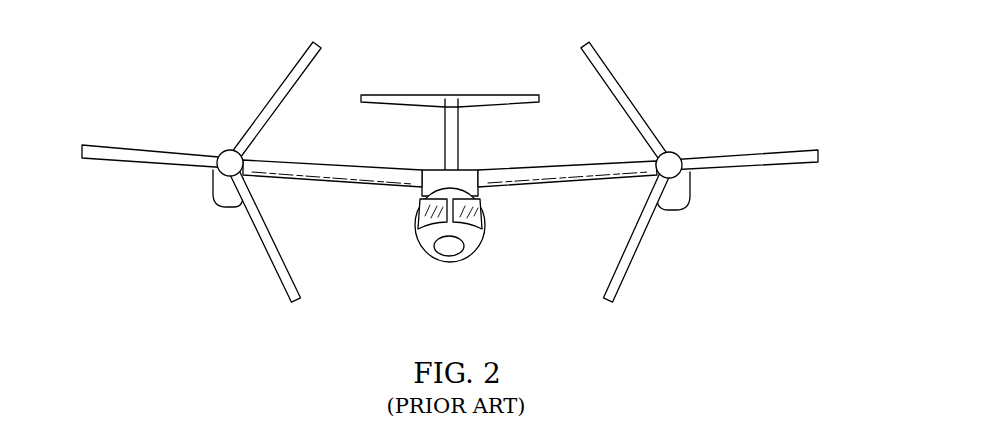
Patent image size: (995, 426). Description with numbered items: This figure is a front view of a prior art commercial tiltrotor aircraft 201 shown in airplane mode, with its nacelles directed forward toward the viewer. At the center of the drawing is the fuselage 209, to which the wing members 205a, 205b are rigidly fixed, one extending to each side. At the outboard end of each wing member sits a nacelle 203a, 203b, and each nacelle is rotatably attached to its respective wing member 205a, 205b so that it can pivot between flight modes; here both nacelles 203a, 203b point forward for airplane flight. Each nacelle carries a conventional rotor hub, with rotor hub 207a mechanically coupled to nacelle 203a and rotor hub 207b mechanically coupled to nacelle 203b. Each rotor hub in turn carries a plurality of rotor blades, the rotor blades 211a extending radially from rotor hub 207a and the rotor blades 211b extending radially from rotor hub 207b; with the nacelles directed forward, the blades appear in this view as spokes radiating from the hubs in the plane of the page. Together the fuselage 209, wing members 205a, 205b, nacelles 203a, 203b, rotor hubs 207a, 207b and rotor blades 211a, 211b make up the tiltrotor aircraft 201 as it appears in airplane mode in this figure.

The tiltrotor aircraft 201 is at (447, 67).
The nacelle 203a is at (676, 214).
The nacelle 203b is at (221, 212).
The wing member 205a is at (553, 162).
The wing member 205b is at (345, 165).
The rotor hub 207a is at (678, 151).
The rotor hub 207b is at (225, 150).
The fuselage 209 is at (447, 262).
The rotor blades 211a is at (613, 68).
The rotor blades 211b is at (289, 68).